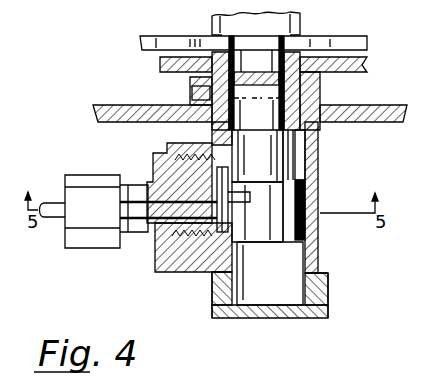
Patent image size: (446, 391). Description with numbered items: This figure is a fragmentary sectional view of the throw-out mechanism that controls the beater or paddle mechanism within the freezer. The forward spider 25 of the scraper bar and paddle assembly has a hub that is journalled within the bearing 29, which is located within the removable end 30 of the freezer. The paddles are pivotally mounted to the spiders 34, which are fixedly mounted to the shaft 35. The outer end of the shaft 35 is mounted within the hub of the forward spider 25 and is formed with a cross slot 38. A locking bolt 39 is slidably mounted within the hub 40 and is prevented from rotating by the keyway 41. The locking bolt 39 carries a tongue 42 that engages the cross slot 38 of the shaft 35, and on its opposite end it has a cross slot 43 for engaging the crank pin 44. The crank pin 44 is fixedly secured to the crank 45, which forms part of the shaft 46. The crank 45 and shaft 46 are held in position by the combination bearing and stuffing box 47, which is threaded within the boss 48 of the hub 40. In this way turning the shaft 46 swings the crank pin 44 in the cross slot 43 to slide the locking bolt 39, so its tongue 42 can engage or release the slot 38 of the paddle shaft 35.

The forward spider 25 is at (352, 65).
The bearing 29 is at (322, 84).
The removable end 30 is at (122, 108).
The spiders 34 is at (330, 44).
The shaft 35 is at (262, 56).
The cross slot 38 is at (190, 83).
The locking bolt 39 is at (265, 150).
The hub 40 is at (318, 262).
The keyway 41 is at (310, 175).
The tongue 42 is at (192, 96).
The cross slot 43 is at (237, 200).
The crank pin 44 is at (300, 218).
The crank 45 is at (250, 243).
The shaft 46 is at (56, 203).
The combination bearing and stuffing box 47 is at (168, 182).
The boss 48 is at (186, 270).